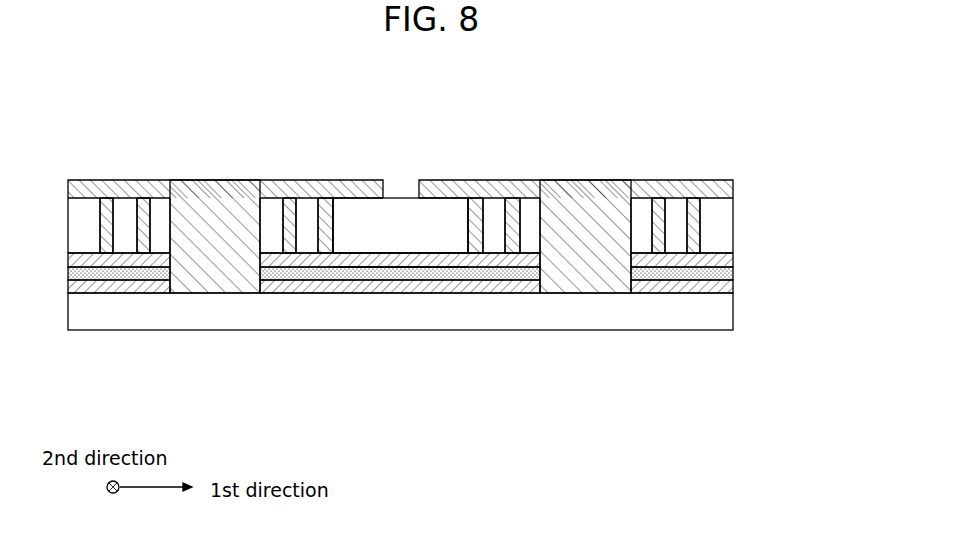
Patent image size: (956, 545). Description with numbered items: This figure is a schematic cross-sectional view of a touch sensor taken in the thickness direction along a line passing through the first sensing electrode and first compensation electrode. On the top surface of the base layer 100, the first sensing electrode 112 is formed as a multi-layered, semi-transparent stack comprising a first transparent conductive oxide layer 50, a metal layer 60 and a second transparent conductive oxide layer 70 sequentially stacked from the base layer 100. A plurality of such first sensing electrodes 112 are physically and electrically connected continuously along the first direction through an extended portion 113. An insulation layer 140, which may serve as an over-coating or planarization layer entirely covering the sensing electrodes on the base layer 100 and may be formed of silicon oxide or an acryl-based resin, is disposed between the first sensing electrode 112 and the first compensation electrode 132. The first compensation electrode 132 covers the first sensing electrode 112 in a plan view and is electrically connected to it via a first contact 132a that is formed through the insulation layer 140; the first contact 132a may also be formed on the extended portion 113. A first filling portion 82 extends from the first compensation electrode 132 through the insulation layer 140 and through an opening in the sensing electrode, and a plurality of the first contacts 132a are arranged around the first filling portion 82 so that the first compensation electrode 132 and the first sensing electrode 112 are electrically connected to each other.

The first transparent conductive oxide layer 50 is at (274, 290).
The metal layer 60 is at (287, 275).
The second transparent conductive oxide layer 70 is at (322, 256).
The first filling portion 82 is at (215, 237).
The base layer 100 is at (733, 306).
The first sensing electrode 112 is at (343, 393).
The extended portion 113 is at (407, 272).
The first compensation electrode 132 is at (138, 188).
The first contact 132a is at (333, 232).
The insulation layer 140 is at (733, 221).